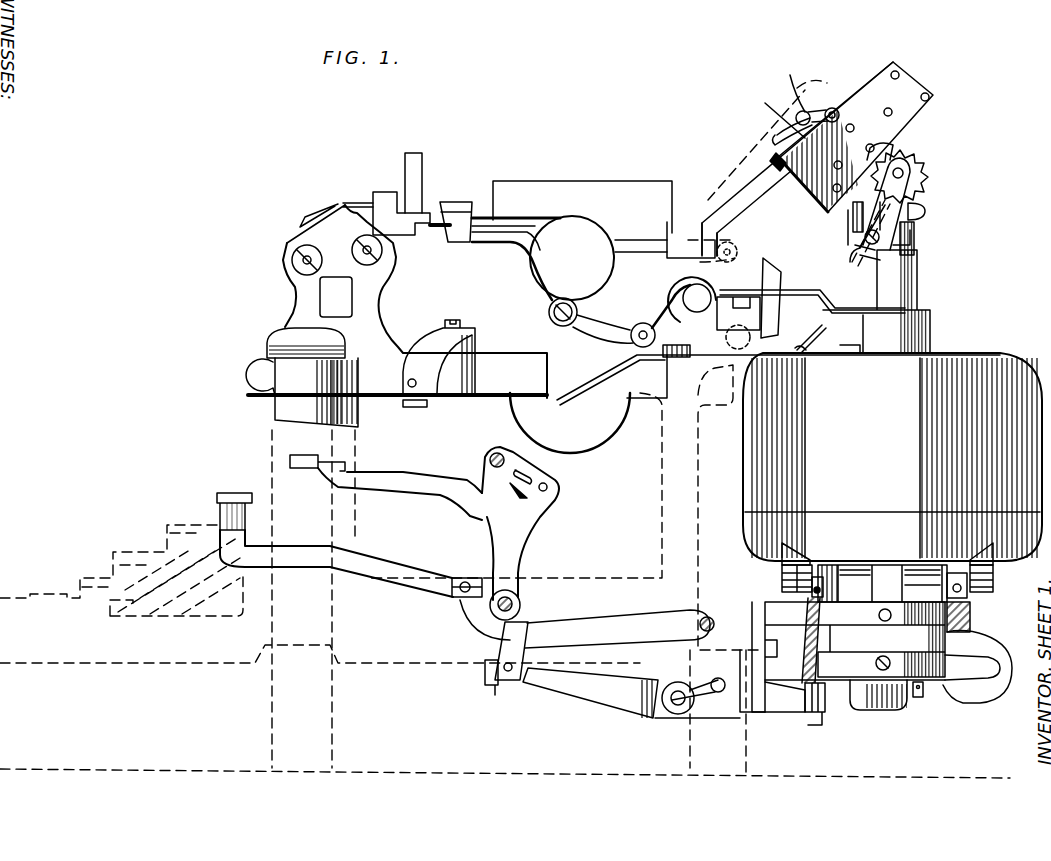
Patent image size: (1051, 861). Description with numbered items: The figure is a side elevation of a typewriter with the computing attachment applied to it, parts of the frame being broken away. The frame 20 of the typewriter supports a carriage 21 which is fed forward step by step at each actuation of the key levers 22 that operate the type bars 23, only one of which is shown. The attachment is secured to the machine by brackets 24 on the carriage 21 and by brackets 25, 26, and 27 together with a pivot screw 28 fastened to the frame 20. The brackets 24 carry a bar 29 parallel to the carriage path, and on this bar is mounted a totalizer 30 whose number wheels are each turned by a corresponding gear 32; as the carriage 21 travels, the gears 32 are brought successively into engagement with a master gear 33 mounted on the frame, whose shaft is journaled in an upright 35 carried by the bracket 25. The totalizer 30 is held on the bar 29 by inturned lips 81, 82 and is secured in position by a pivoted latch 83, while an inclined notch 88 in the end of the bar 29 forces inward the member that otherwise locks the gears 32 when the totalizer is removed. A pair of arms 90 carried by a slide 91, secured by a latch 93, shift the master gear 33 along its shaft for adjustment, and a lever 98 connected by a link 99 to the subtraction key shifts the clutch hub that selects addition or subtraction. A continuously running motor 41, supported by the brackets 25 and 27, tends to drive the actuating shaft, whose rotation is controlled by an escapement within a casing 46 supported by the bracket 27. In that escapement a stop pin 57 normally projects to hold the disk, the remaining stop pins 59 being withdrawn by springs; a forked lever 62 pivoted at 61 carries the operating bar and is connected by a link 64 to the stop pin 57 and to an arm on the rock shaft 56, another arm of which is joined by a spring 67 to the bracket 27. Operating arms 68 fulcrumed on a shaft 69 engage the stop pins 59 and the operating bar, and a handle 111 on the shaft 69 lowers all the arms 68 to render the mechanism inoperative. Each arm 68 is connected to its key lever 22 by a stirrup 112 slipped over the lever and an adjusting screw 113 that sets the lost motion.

The frame 20 is at (290, 320).
The carriage 21 is at (515, 182).
The key levers 22 is at (382, 563).
The type bars 23 is at (415, 473).
The brackets 24 is at (733, 188).
The bracket 25 is at (795, 292).
The bracket 26 is at (470, 338).
The bracket 27 is at (745, 718).
The pivot screw 28 is at (682, 345).
The bar 29 is at (772, 112).
The totalizer 30 is at (915, 115).
The gears 32 is at (893, 152).
The master gear 33 is at (925, 177).
The upright 35 is at (852, 262).
The motor 41 is at (962, 370).
The casing 46 is at (975, 632).
The rock shaft 56 is at (828, 578).
The stop pin 57 is at (918, 698).
The stop pins 59 is at (890, 712).
The pivot 61 is at (893, 650).
The forked lever 62 is at (940, 680).
The link 64 is at (1005, 658).
The spring 67 is at (820, 640).
The operating arms 68 is at (625, 700).
The shaft 69 is at (672, 710).
The inturned lip 81 is at (778, 168).
The inturned lip 82 is at (834, 108).
The pivoted latch 83 is at (796, 92).
The inclined notch 88 is at (775, 138).
The arms 90 is at (905, 165).
The slide 91 is at (915, 238).
The latch 93 is at (925, 210).
The lever 98 is at (858, 208).
The link 99 is at (822, 320).
The handle 111 is at (682, 680).
The stirrups 112 is at (540, 625).
The adjusting screws 113 is at (489, 688).